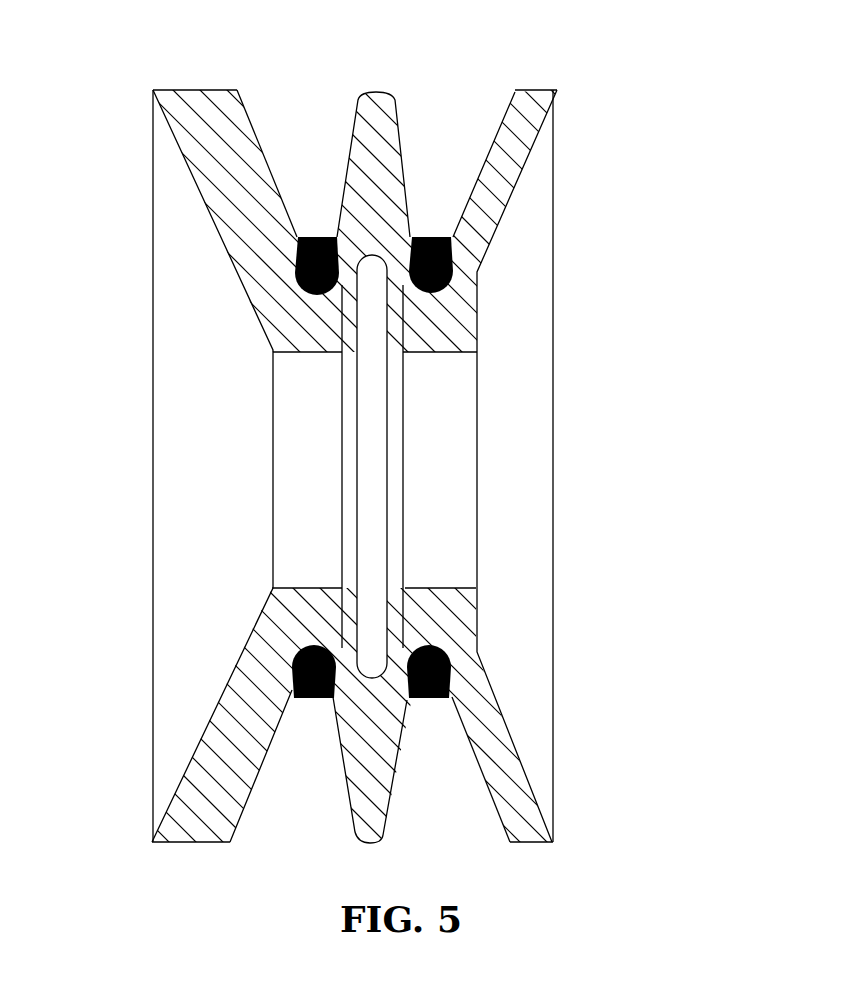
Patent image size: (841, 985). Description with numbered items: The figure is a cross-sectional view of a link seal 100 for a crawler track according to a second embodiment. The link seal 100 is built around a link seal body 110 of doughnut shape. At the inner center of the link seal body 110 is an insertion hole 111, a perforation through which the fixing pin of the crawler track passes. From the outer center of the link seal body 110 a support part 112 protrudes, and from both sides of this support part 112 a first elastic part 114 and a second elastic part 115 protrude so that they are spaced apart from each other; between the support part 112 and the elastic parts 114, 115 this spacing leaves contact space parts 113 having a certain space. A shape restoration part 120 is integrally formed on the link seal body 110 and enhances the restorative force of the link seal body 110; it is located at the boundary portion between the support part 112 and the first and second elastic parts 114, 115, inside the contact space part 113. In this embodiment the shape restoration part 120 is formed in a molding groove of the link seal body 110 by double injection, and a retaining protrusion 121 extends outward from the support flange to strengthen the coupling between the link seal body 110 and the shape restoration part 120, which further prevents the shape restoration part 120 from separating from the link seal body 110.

The link seal 100 is at (420, 492).
The link seal body 110 is at (168, 427).
The insertion hole 111 is at (445, 442).
The support part 112 is at (387, 117).
The contact space part 113 is at (307, 183).
The first elastic part 114 is at (185, 90).
The second elastic part 115 is at (537, 85).
The shape restoration part 120 is at (450, 677).
The retaining protrusion 121 is at (430, 700).